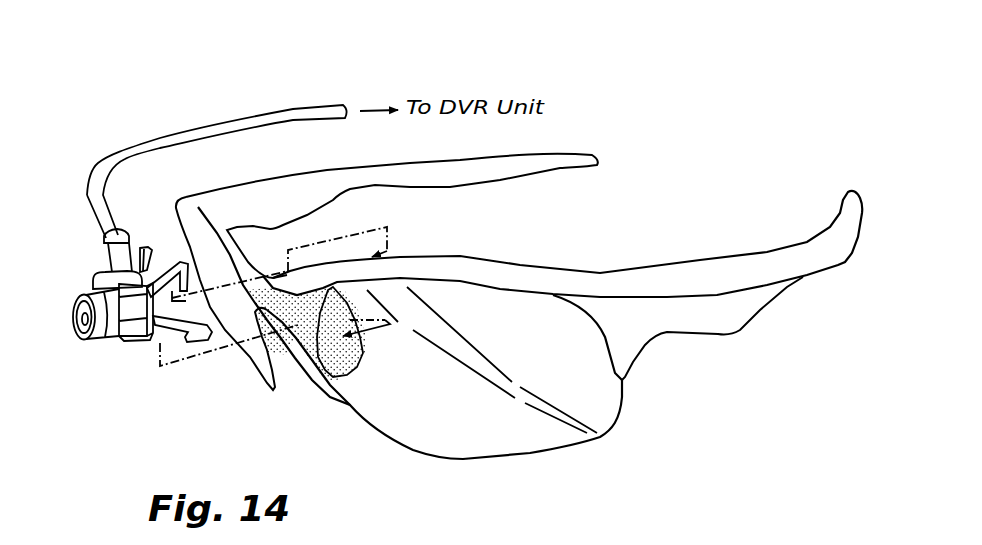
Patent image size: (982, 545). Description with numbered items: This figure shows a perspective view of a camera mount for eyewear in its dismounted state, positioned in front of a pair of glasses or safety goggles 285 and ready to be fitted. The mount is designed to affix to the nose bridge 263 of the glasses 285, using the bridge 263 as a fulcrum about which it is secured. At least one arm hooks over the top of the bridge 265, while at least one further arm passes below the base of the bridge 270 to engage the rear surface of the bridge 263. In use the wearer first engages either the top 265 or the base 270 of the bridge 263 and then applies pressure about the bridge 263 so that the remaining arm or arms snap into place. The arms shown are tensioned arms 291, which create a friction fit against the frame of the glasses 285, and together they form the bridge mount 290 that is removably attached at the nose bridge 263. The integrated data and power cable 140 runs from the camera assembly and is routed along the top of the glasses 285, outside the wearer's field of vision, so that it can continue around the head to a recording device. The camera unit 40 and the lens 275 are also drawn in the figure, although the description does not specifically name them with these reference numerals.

The integrated data and power cable 140 is at (288, 115).
The camera 40 is at (111, 347).
The bridge mount 290 is at (135, 238).
The tensioned arm 291 is at (158, 262).
The top of the bridge 265 is at (260, 273).
The glasses or safety goggles 285 is at (682, 318).
The lens 275 is at (390, 405).
The nose bridge 263 is at (312, 335).
The base of the bridge 270 is at (278, 332).